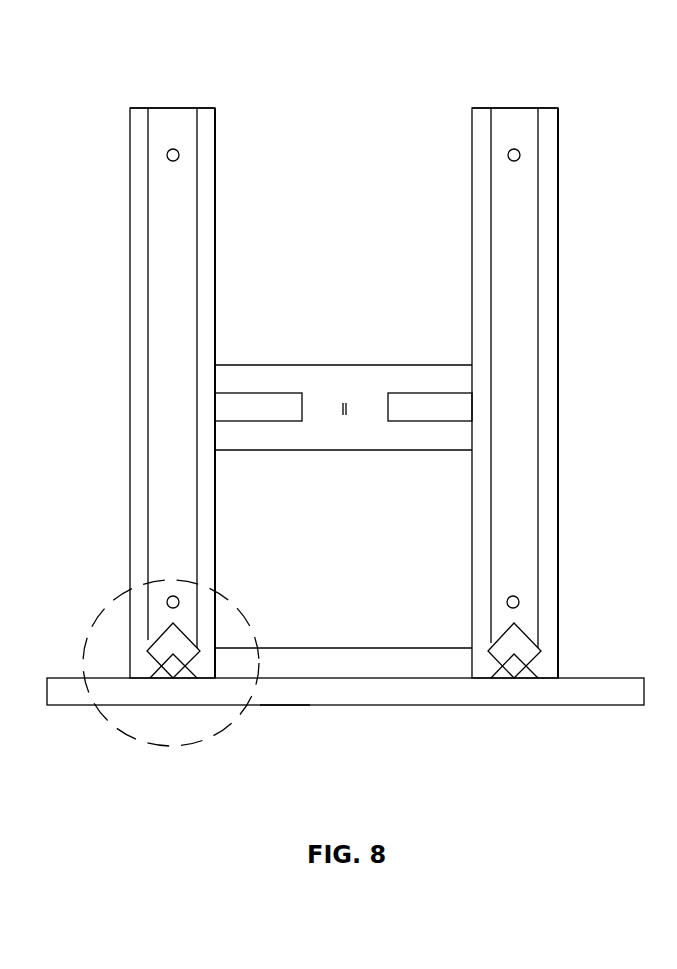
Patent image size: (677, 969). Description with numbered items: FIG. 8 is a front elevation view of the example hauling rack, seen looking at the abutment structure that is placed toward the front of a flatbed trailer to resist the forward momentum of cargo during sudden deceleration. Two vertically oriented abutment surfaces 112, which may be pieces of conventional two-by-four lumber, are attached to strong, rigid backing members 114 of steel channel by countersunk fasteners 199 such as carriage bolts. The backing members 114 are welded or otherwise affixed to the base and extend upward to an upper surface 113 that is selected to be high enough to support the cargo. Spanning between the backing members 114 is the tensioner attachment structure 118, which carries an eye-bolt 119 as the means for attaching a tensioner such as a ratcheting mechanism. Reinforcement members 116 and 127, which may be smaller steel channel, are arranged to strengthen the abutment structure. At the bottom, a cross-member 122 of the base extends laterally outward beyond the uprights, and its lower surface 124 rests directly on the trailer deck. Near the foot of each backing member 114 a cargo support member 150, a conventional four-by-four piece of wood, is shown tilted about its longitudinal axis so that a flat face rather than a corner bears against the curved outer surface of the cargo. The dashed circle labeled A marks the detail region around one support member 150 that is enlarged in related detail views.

The abutment surface 112 is at (168, 295).
The upper surface 113 is at (178, 107).
The backing member 114 is at (143, 163).
The reinforcement member 116 is at (263, 405).
The tensioner attachment structure 118 is at (282, 381).
The eye-bolt 119 is at (347, 404).
The cross-member 122 is at (383, 688).
The lower surface 124 is at (283, 706).
The reinforcement member 127 is at (313, 660).
The cargo support member 150 is at (172, 644).
The countersunk fastener 199 is at (171, 162).
The detail region A is at (148, 745).